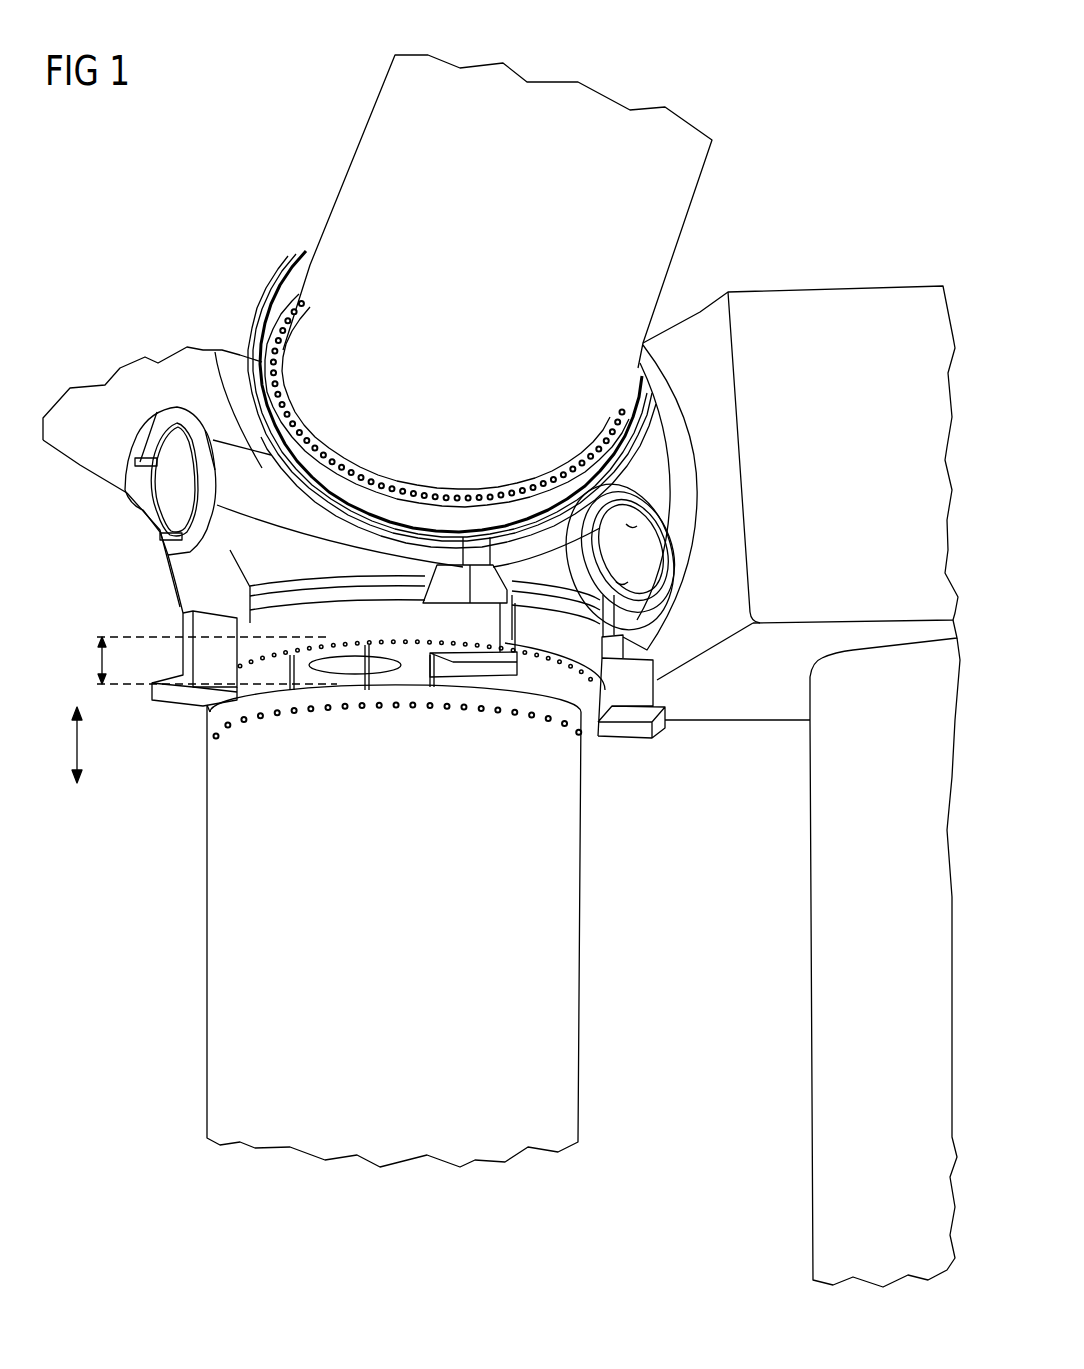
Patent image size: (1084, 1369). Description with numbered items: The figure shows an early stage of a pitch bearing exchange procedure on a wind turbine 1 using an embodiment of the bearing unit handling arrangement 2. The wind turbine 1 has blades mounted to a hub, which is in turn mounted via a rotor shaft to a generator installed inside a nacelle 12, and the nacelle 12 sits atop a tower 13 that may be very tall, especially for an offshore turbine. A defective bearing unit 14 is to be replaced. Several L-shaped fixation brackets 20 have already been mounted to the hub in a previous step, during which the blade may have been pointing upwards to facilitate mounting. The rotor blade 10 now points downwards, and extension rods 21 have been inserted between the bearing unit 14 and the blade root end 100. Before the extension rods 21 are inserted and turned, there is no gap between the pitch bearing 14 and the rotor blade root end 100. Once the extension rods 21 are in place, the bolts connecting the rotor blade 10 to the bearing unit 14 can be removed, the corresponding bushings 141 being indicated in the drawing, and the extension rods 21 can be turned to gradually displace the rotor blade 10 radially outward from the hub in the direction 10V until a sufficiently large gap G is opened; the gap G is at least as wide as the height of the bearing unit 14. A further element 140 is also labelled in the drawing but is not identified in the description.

The wind turbine 1 is at (843, 130).
The bearing unit handling arrangement 2 is at (130, 584).
The rotor blade 10 is at (682, 200).
The nacelle 12 is at (848, 300).
The tower 13 is at (822, 908).
The bearing unit 14 is at (287, 290).
The L-shaped fixation bracket 20 is at (188, 660).
The extension rod 21 is at (294, 680).
The blade root end 100 is at (571, 792).
The bolts of pitch bearing 140 is at (580, 460).
The bushing 141 is at (553, 670).
The gap G is at (208, 660).
The direction 10V is at (78, 745).